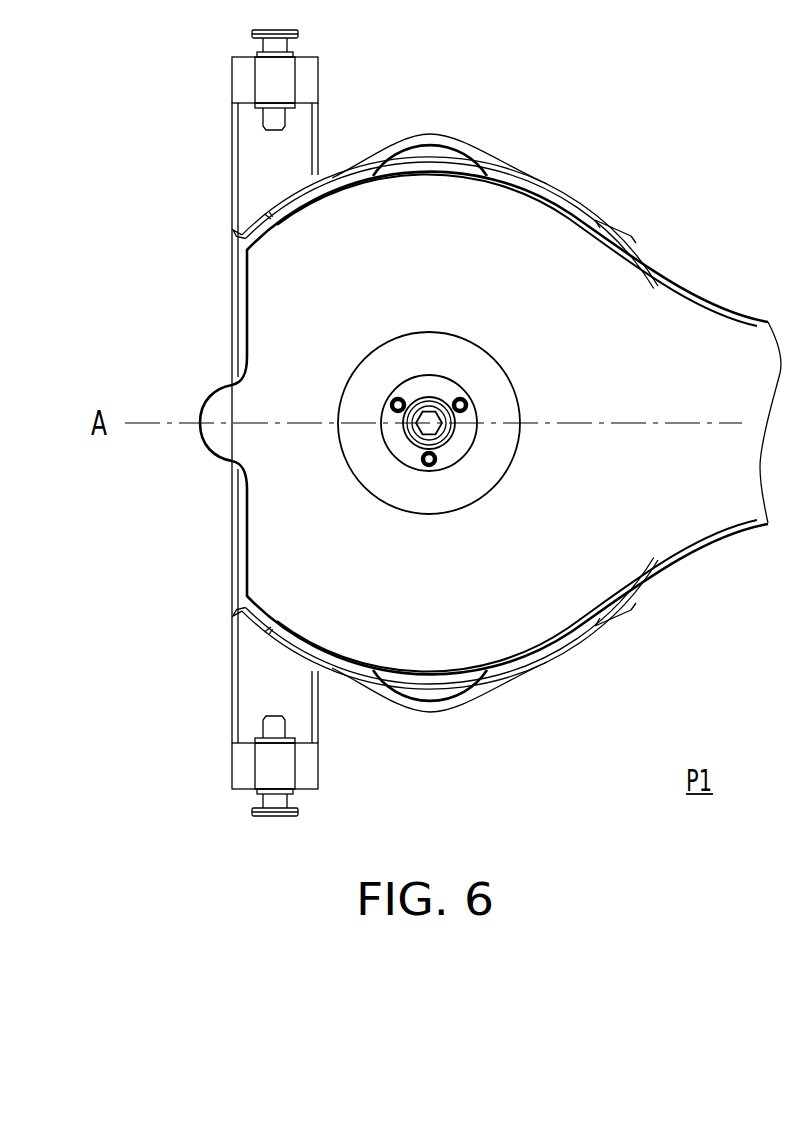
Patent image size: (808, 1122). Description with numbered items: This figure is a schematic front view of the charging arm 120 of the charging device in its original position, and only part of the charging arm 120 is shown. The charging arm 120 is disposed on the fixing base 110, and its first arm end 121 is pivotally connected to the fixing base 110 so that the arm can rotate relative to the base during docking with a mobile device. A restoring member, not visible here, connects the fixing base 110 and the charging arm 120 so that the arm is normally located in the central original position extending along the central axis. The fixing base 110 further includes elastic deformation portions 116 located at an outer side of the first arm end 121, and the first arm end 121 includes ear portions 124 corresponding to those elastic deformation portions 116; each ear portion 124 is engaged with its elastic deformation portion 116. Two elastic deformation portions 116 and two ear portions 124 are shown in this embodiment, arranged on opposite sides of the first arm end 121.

The fixing base 110 is at (372, 158).
The ear portion 124 is at (418, 160).
The elastic deformation portion 116 is at (452, 138).
The first arm end 121 is at (513, 207).
The charging arm 120 is at (450, 221).